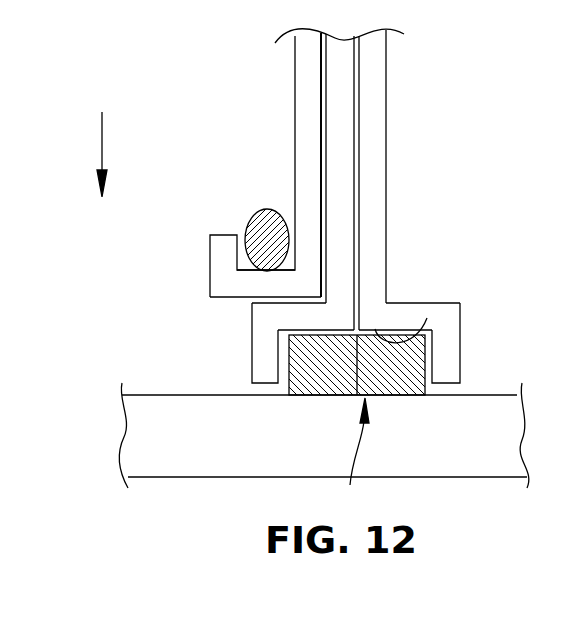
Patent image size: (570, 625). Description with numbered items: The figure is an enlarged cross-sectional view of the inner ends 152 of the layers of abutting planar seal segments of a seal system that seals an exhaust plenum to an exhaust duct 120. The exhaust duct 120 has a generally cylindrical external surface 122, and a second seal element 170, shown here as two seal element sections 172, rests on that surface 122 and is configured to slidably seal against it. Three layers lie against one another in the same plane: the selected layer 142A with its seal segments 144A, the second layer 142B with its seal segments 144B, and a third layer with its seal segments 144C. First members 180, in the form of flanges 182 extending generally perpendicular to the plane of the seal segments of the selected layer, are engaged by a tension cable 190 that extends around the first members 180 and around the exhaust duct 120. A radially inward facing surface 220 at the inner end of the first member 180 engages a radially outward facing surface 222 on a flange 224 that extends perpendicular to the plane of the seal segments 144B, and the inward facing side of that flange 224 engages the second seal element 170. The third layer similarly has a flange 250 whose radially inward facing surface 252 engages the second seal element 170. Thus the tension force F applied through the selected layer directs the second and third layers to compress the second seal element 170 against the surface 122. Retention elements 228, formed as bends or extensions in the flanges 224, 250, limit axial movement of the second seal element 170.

The exhaust duct 120 is at (478, 470).
The external surface 122 is at (492, 393).
The layer 142A is at (219, 165).
The second layer 142B is at (342, 70).
The seal segments 144A is at (238, 168).
The seal segments 144B is at (340, 98).
The seal segments 144C is at (372, 195).
The inner end 152 is at (310, 128).
The second seal element 170 is at (358, 454).
The seal element section 172 is at (320, 378).
The first member 180 is at (190, 279).
The flange 182 is at (238, 279).
The tension cable 190 is at (256, 208).
The radially inward facing surface 220 is at (235, 298).
The radially outward facing surface 222 is at (266, 302).
The flange 224 is at (253, 345).
The retention element 228 is at (448, 368).
The flange 250 is at (402, 312).
The radially inward facing surface 252 is at (427, 318).
The tension force F is at (105, 138).